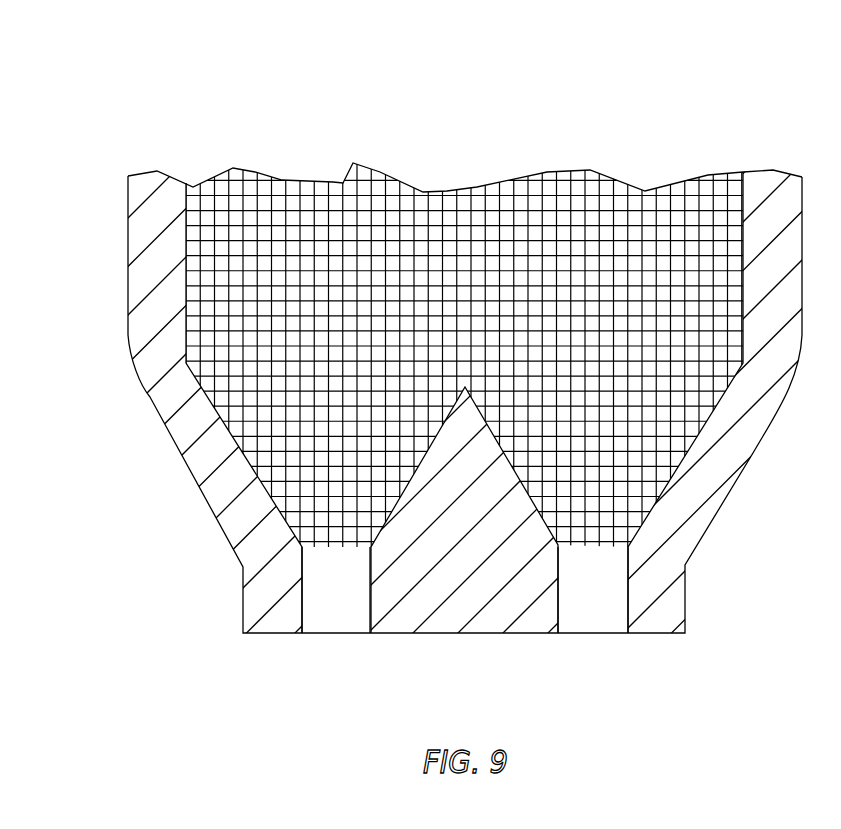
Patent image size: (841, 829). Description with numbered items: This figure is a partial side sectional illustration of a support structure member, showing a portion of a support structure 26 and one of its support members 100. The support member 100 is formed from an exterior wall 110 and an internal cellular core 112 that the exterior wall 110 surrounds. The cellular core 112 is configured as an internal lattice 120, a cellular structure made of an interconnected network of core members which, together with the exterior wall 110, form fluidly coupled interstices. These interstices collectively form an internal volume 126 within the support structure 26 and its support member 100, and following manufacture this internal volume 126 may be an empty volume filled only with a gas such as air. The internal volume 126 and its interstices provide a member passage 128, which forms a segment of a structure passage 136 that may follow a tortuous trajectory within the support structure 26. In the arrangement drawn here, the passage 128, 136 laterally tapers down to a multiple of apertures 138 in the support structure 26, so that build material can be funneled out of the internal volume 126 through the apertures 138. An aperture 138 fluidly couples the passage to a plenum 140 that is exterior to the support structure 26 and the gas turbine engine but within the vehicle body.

The support structure 26 is at (420, 414).
The support member 100 is at (712, 127).
The exterior wall 110 is at (157, 172).
The internal volume 126 is at (465, 322).
The cellular core 112 is at (465, 322).
The internal lattice 120 is at (465, 322).
The member passage 128 is at (465, 322).
The structure passage 136 is at (298, 178).
The aperture 138 is at (337, 620).
The plenum 140 is at (481, 690).